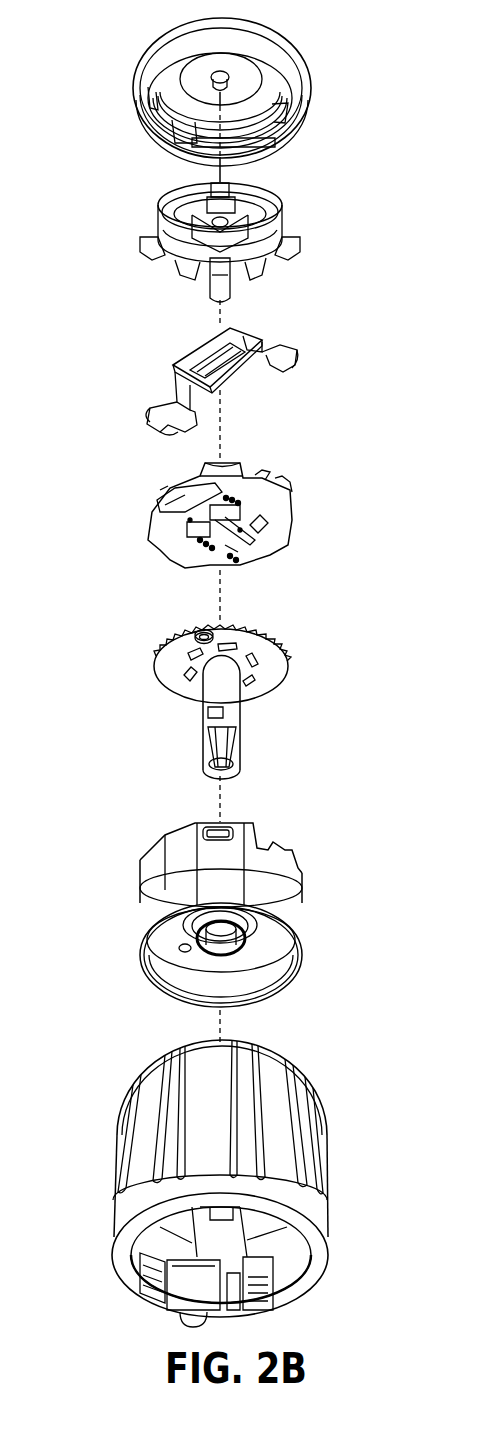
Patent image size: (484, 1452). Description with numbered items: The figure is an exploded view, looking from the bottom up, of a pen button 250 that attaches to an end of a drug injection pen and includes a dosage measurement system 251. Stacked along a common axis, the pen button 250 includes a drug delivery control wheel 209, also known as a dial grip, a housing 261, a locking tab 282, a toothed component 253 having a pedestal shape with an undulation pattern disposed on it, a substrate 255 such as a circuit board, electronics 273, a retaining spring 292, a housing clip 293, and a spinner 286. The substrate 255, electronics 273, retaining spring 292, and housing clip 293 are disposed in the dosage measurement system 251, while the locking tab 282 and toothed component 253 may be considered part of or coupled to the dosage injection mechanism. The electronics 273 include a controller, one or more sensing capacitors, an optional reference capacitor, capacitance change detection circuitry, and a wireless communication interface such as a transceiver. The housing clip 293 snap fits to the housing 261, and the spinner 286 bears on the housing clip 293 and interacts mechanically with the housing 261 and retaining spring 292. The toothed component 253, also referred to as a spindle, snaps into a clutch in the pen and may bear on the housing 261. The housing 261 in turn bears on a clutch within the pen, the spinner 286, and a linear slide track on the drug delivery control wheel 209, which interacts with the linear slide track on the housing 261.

The spinner 286 is at (143, 108).
The housing clip 293 is at (260, 268).
The retaining spring 292 is at (228, 372).
The electronics 273 is at (260, 496).
The substrate 255 is at (176, 566).
The dosage measurement system 251 is at (103, 183).
The toothed component 253 is at (172, 634).
The locking tab 282 is at (210, 715).
The housing 261 is at (150, 908).
The drug delivery control wheel 209 is at (133, 1175).
The pen button 250 is at (328, 22).